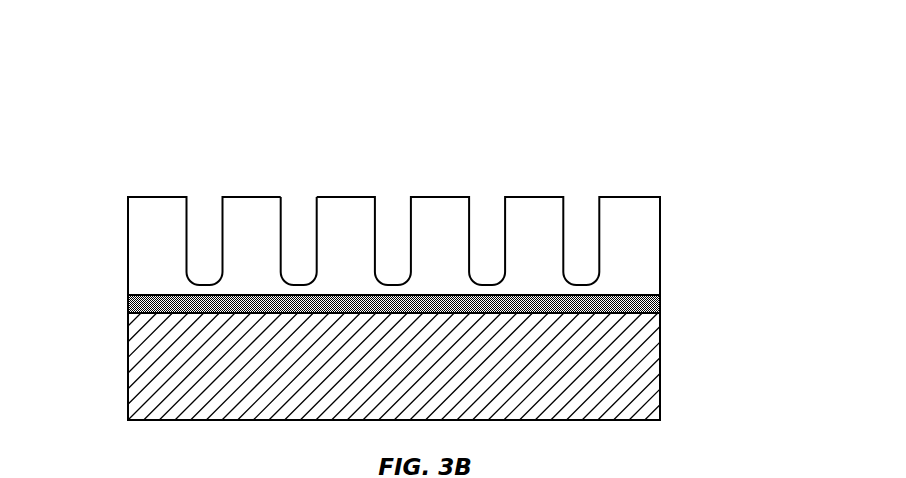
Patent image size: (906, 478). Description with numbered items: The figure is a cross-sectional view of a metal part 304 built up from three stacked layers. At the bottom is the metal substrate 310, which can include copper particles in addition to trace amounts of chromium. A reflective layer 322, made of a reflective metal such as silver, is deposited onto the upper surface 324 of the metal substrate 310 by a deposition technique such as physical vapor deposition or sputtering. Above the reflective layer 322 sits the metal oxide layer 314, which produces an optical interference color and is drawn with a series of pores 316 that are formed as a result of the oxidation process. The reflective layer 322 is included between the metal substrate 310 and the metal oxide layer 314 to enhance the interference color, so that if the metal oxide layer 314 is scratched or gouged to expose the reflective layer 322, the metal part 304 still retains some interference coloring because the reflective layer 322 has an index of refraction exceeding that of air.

The metal part 304 is at (403, 226).
The metal substrate 310 is at (660, 370).
The metal oxide layer 314 is at (660, 232).
The pores 316 is at (303, 207).
The reflective layer 322 is at (660, 305).
The upper surface 324 is at (128, 318).